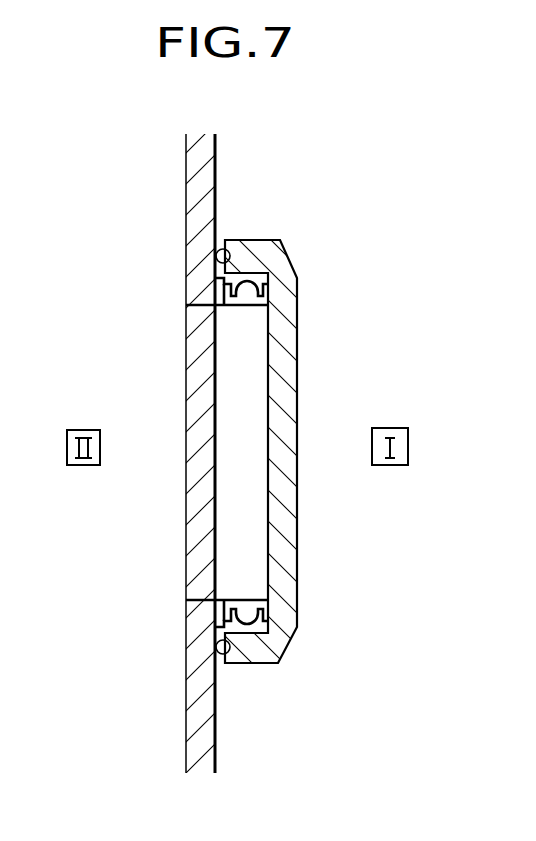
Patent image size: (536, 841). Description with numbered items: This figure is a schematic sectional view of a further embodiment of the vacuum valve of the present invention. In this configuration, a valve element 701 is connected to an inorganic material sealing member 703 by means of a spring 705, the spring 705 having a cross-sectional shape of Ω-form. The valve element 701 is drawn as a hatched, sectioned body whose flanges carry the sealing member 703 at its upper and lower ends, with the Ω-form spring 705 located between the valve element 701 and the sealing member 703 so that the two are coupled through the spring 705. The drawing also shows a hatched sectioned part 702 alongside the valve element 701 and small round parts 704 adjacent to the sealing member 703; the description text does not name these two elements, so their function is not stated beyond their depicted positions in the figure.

The valve element 701 is at (290, 567).
The wall 702 is at (197, 718).
The inorganic material sealing member 703 is at (215, 285).
The O-ring 704 is at (229, 253).
The spring 705 is at (265, 291).